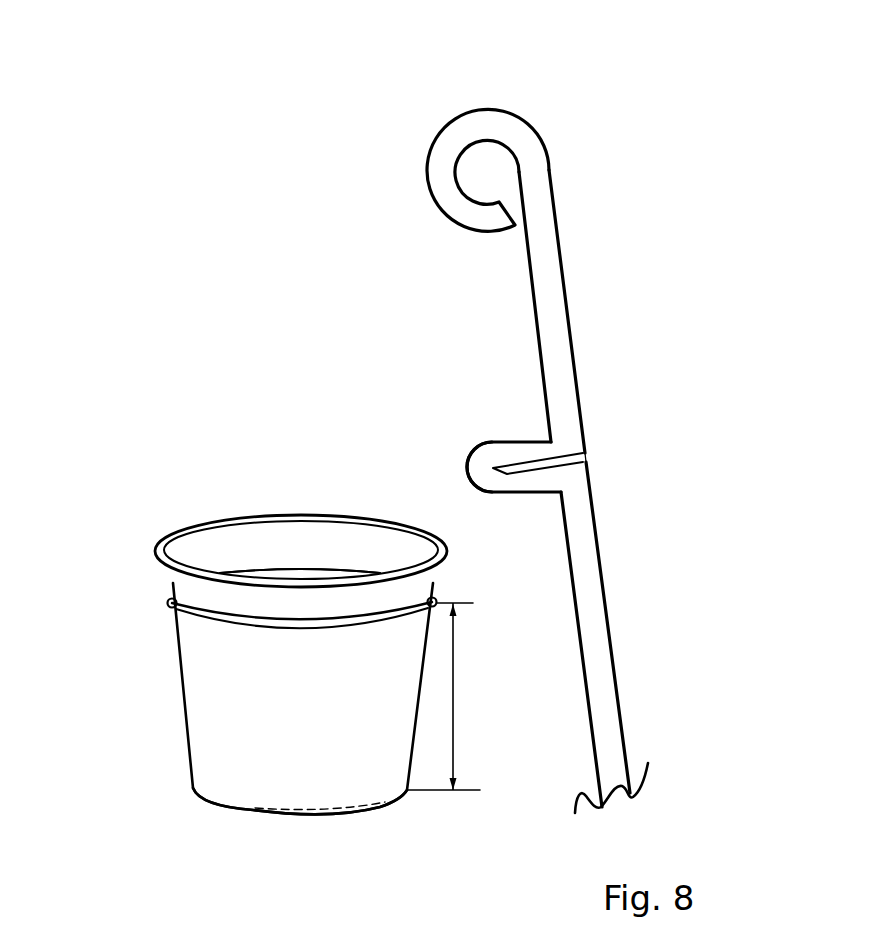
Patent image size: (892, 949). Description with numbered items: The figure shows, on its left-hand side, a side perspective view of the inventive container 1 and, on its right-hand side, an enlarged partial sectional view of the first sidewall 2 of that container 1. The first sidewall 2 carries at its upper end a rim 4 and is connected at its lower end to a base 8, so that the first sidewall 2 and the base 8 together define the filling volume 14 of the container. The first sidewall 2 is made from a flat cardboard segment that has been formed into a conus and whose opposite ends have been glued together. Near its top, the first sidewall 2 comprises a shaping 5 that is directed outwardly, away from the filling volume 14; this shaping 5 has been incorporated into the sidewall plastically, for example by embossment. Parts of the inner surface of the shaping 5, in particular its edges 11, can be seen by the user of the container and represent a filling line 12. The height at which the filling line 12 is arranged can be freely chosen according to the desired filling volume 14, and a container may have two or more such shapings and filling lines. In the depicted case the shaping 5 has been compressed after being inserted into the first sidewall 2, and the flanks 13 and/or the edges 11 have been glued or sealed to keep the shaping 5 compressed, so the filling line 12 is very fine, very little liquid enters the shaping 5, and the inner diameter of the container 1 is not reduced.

The container 1 is at (116, 358).
The first sidewall 2 is at (566, 313).
The rim 4 is at (432, 92).
The shaping 5 is at (451, 420).
The base 8 is at (253, 812).
The edges 11 is at (523, 450).
The filling line 12 is at (600, 450).
The flanks 13 is at (527, 477).
The filling volume 14 is at (738, 280).